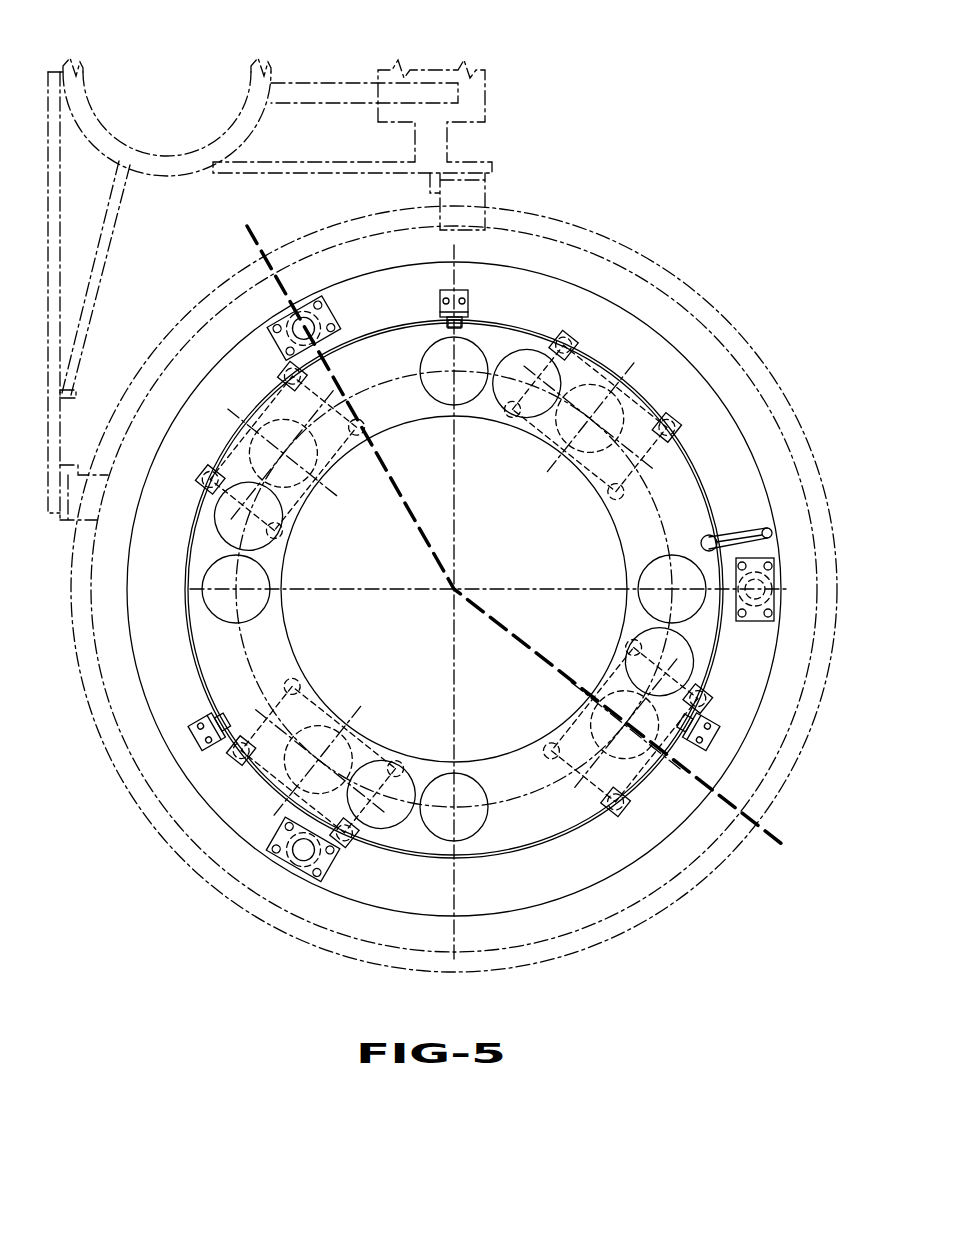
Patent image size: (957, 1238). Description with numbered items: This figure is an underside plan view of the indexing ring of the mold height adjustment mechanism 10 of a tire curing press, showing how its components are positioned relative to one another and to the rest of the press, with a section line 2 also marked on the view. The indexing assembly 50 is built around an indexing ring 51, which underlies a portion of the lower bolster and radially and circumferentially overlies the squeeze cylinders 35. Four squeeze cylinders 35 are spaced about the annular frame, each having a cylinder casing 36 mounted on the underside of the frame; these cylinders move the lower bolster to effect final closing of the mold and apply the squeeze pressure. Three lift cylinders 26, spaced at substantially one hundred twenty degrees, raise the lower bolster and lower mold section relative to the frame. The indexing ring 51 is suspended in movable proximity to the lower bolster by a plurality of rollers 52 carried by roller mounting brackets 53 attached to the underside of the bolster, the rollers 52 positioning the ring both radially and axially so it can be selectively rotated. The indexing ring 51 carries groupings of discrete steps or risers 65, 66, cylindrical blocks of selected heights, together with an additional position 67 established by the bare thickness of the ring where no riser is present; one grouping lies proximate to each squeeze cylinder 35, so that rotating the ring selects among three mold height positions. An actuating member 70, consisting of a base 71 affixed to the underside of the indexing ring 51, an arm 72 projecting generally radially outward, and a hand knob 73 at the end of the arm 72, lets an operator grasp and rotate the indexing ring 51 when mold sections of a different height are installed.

The section line 2- 2 is at (247, 226).
The mold height adjustment mechanism 10 is at (183, 543).
The lift cylinder 26 is at (297, 320).
The squeeze cylinder 35 is at (265, 368).
The cylinder casing 36 is at (270, 392).
The indexing assembly 50 is at (185, 628).
The indexing ring 51 is at (217, 650).
The roller 52 is at (457, 322).
The roller mounting bracket 53 is at (440, 296).
The step 65 is at (446, 379).
The step 66 is at (515, 372).
The position 67 is at (578, 418).
The actuating member 70 is at (753, 533).
The base 71 is at (709, 543).
The arm 72 is at (735, 537).
The hand knob 73 is at (770, 533).